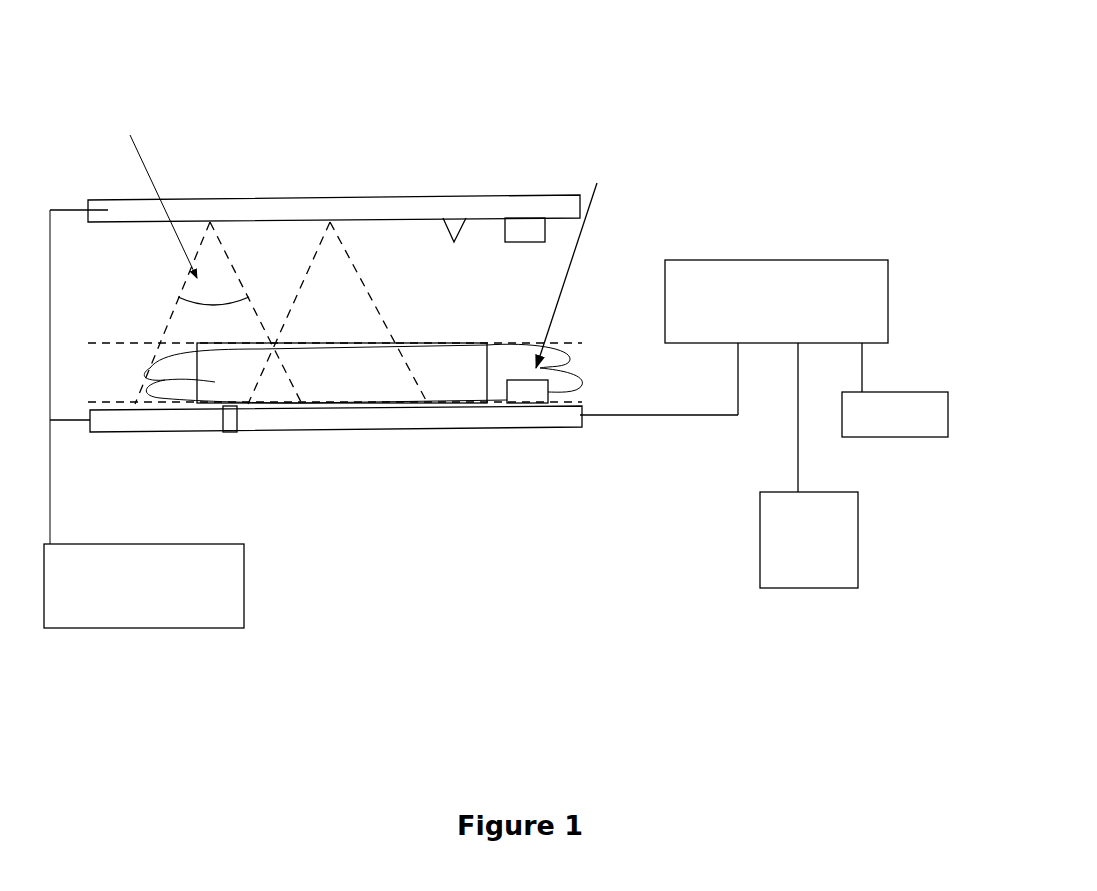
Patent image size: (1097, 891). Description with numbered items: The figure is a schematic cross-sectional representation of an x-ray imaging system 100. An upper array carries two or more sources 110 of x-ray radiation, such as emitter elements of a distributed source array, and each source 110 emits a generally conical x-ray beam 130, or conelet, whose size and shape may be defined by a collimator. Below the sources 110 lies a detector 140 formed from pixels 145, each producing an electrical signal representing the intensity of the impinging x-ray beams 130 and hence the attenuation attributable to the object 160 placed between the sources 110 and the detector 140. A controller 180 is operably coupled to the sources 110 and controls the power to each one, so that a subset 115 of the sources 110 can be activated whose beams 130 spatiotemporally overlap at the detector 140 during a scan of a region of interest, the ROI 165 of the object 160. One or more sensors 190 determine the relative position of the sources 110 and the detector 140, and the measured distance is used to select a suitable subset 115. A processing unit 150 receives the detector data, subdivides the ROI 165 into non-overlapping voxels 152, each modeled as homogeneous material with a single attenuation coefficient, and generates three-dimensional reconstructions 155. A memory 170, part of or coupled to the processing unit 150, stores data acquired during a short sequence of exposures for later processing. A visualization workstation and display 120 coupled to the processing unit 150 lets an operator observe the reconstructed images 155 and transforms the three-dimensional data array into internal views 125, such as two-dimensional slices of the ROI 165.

The x-ray imaging system 100 is at (356, 98).
The source 110 is at (212, 212).
The subset of sources 115 is at (326, 228).
The x-ray radiation beam 130 is at (137, 181).
The detector 140 is at (346, 427).
The pixel 145 is at (228, 432).
The processing unit 150 is at (776, 250).
The voxel 152 is at (732, 300).
The three-dimensional reconstruction 155 is at (833, 300).
The object 160 is at (465, 372).
The ROI 165 is at (339, 373).
The memory 170 is at (911, 380).
The visualization workstation and display 120 is at (819, 606).
The internal view 125 is at (809, 540).
The controller 180 is at (191, 604).
The sensor 190 is at (529, 205).